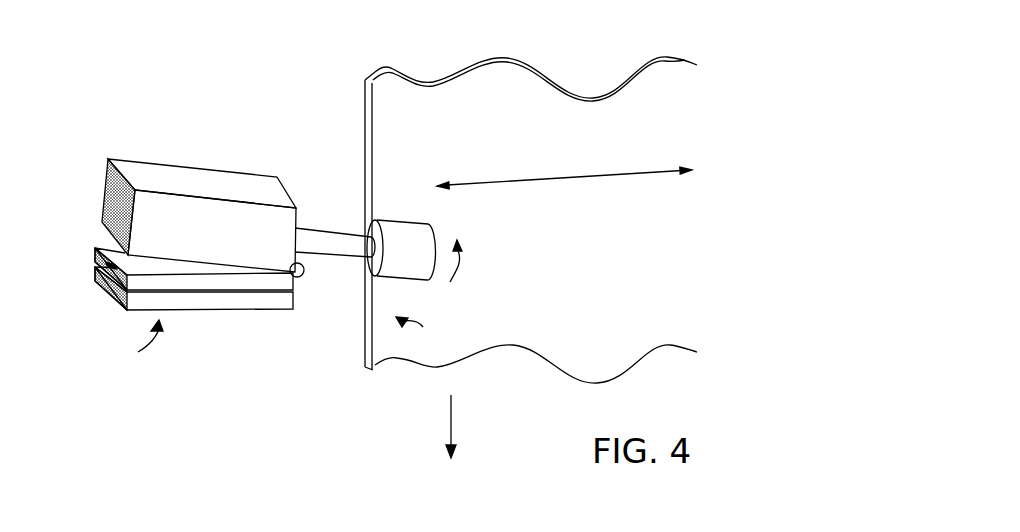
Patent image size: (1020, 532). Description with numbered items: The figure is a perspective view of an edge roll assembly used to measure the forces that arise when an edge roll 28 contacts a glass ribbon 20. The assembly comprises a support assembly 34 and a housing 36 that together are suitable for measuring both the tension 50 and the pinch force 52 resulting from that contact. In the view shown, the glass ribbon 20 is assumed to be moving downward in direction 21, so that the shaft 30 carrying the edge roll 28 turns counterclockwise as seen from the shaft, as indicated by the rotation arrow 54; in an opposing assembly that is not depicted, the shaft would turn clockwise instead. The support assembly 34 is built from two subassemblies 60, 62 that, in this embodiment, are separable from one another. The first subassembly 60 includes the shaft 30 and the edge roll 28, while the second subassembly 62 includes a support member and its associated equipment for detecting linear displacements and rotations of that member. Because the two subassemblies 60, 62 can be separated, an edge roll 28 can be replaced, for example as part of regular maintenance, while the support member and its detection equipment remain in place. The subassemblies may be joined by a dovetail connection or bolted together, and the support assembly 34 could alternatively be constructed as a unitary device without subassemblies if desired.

The glass ribbon 20 is at (398, 87).
The downward direction 21 is at (447, 428).
The edge roll 28 is at (407, 220).
The shaft 30 is at (342, 230).
The support assembly 34 is at (136, 350).
The housing 36 is at (210, 182).
The tension 50 is at (597, 178).
The pinch force 52 is at (415, 320).
The counterclockwise shaft rotation 54 is at (457, 263).
The first subassembly 60 is at (90, 159).
The second subassembly 62 is at (90, 263).